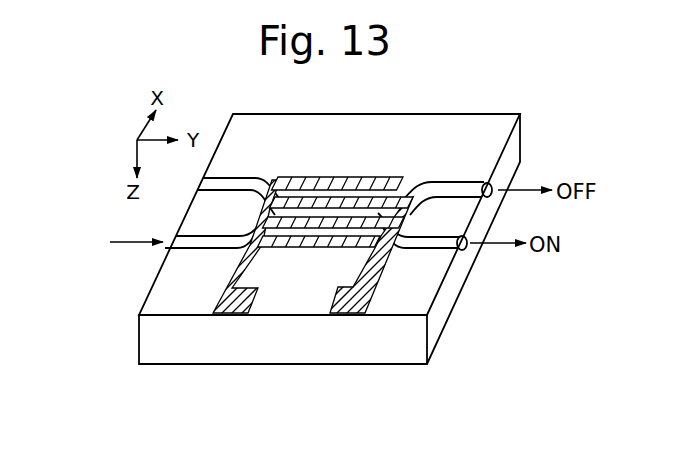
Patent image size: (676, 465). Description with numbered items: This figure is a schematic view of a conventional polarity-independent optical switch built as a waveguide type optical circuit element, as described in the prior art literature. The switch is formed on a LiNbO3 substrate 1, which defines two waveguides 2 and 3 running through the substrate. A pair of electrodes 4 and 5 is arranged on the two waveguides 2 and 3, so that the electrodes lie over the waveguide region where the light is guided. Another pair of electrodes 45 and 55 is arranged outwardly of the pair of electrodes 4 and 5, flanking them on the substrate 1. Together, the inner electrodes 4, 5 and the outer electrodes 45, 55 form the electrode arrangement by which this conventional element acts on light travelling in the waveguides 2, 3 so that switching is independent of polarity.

The LiNbO3 substrate 1 is at (216, 343).
The waveguide 2 is at (193, 248).
The waveguide 3 is at (238, 177).
The electrode 4 is at (328, 226).
The electrode 5 is at (349, 203).
The electrode 45 is at (280, 248).
The electrode 55 is at (318, 177).